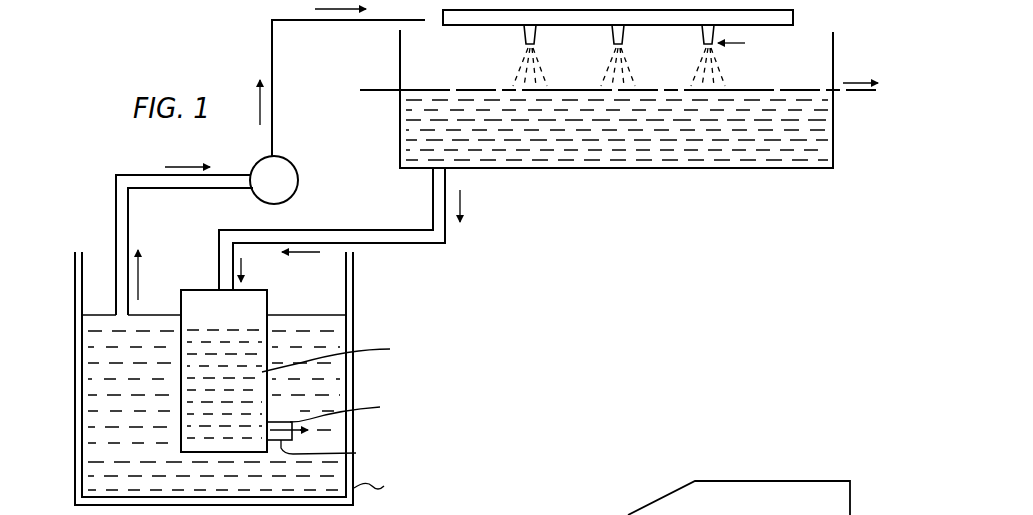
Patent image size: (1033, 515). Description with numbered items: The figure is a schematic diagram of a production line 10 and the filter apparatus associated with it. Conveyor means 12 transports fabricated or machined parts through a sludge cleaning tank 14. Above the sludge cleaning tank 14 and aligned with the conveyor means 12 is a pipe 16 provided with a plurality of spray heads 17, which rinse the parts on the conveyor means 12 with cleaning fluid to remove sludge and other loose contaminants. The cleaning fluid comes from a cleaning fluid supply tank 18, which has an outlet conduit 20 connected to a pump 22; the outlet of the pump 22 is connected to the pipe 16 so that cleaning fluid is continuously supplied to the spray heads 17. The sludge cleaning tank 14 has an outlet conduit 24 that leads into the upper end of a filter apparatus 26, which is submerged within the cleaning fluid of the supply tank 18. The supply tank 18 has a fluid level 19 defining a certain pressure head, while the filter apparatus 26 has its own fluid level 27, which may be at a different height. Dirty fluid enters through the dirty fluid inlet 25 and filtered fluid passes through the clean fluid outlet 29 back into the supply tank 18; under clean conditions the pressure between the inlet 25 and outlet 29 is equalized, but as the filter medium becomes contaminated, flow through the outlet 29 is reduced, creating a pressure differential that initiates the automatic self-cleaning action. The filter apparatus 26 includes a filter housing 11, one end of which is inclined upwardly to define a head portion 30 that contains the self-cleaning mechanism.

The production line 10 is at (806, 29).
The filter housing 11 is at (181, 423).
The conveyor means 12 is at (858, 98).
The sludge cleaning tank 14 is at (603, 170).
The pipe 16 is at (489, 26).
The spray heads 17 is at (537, 32).
The cleaning fluid supply tank 18 is at (76, 378).
The fluid level 19 is at (330, 315).
The outlet conduit 20 is at (140, 177).
The pump 22 is at (259, 160).
The outlet conduit 24 is at (434, 244).
The dirty fluid inlet 25 is at (225, 292).
The filter apparatus 26 is at (267, 290).
The fluid level 27 is at (238, 328).
The clean fluid outlet 29 is at (423, 432).
The head portion 30 is at (800, 467).